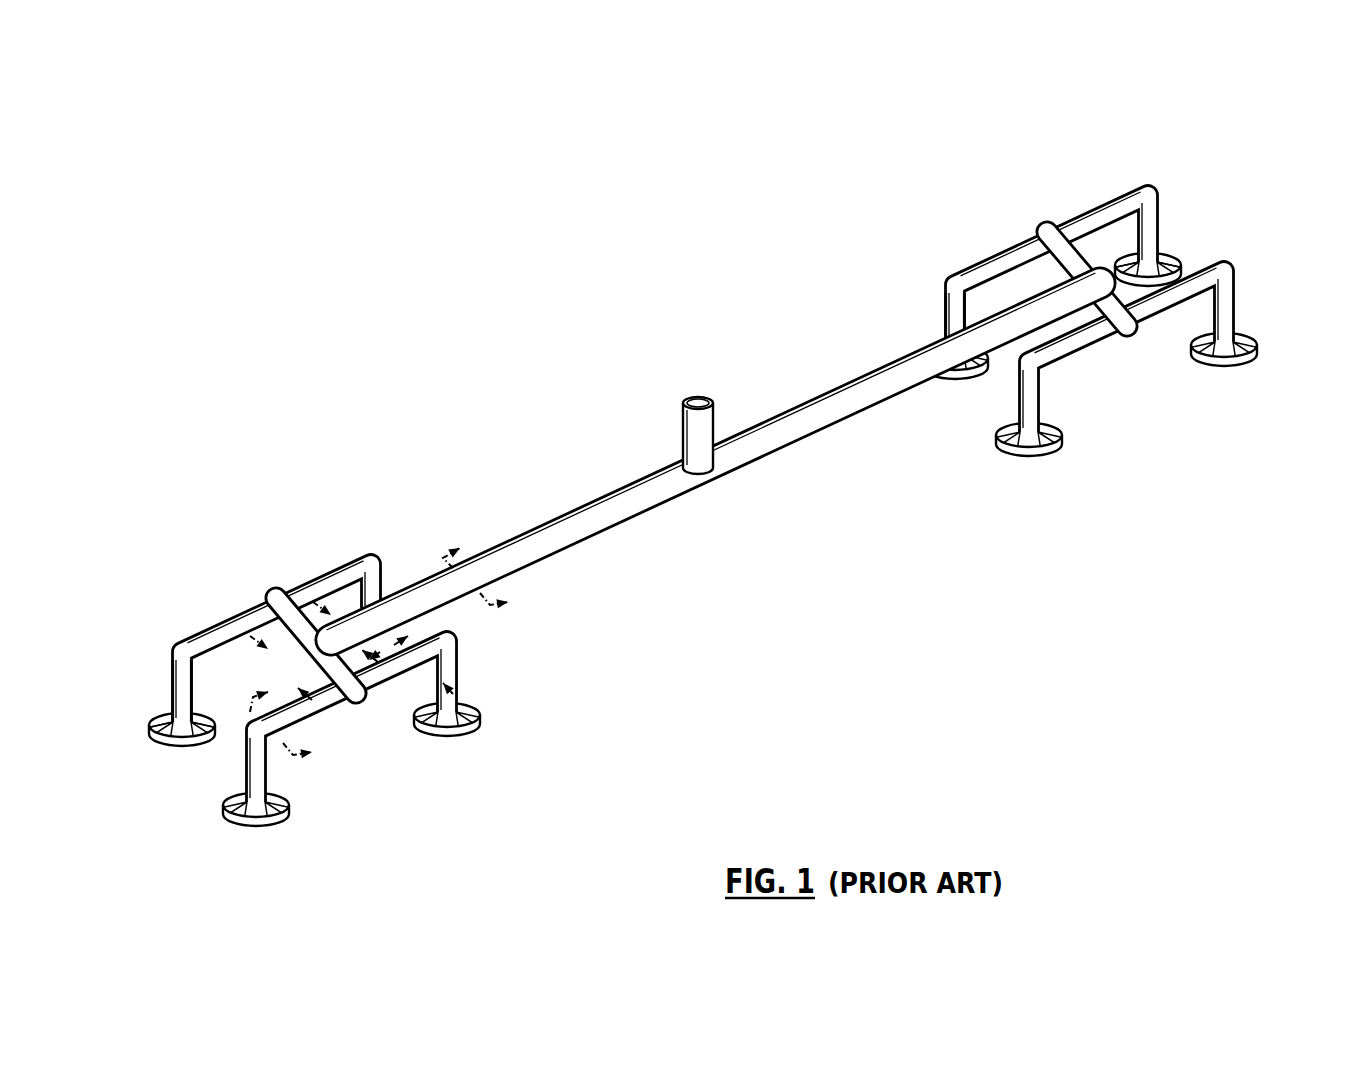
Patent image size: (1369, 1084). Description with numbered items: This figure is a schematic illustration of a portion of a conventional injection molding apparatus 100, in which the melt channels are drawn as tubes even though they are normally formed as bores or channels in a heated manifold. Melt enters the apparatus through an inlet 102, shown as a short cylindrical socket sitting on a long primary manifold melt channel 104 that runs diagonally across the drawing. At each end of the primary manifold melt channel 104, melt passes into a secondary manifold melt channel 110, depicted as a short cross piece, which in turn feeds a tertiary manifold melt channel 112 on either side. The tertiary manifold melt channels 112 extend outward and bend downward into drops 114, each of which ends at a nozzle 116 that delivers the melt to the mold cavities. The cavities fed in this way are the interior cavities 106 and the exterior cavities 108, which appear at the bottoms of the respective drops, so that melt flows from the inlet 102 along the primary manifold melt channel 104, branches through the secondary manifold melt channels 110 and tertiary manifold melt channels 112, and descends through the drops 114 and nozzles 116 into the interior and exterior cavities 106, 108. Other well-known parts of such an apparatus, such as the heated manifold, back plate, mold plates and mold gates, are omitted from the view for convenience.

The injection molding apparatus 100 is at (535, 312).
The inlet 102 is at (682, 420).
The primary manifold melt channel 104 is at (782, 423).
The interior cavity 106 is at (412, 642).
The exterior cavity 108 is at (157, 727).
The secondary manifold melt channel 110 is at (281, 601).
The tertiary manifold melt channel 112 is at (200, 634).
The drop 114 is at (167, 673).
The nozzle 116 is at (163, 717).